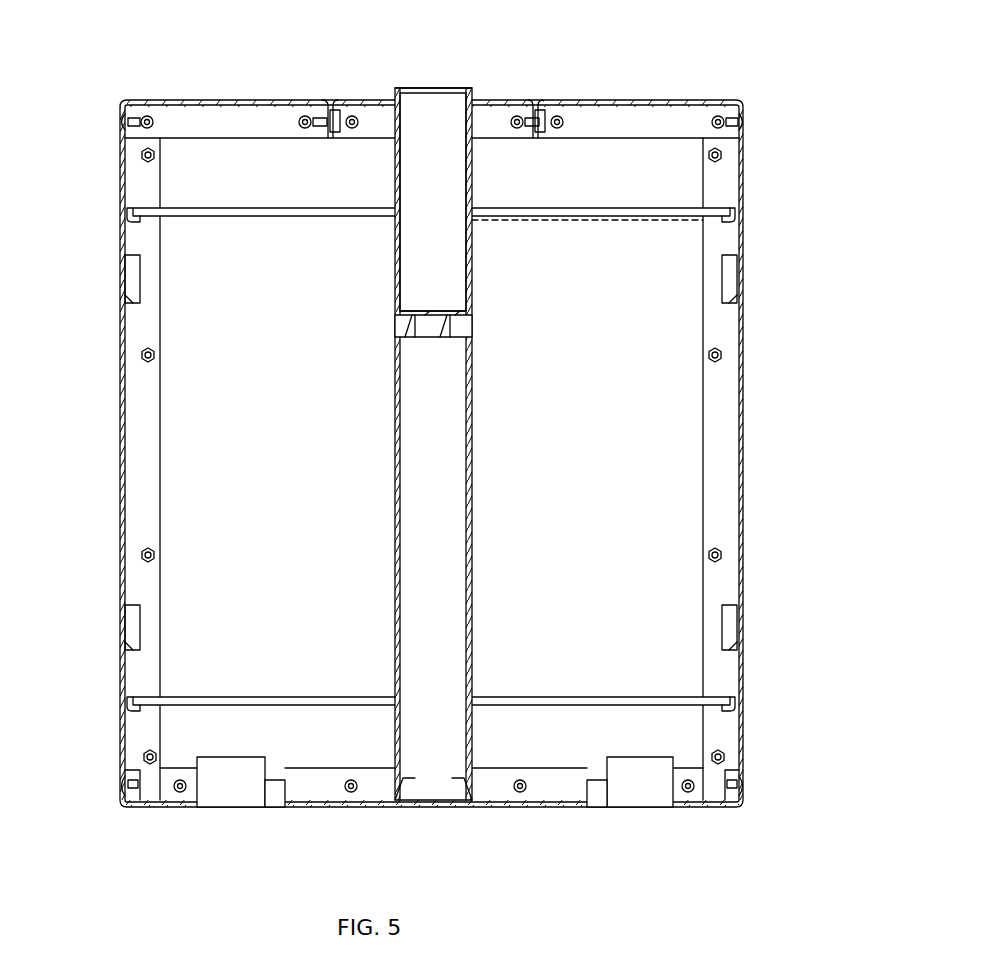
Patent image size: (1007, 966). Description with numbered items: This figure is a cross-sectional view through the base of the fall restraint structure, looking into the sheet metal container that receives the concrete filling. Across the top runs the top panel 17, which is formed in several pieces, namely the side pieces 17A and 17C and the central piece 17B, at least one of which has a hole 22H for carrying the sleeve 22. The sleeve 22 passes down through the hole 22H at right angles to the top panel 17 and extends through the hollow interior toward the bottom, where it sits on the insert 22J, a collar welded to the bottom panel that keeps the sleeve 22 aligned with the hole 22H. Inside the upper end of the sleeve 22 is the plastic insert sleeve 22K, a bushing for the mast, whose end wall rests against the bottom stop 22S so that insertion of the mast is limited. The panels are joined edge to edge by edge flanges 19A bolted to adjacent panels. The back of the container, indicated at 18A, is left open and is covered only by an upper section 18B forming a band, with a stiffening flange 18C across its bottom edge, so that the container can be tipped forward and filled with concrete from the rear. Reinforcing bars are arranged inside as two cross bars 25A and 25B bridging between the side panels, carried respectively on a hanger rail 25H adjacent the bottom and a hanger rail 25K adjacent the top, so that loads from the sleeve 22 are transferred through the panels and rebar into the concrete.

The top panel 17 is at (358, 78).
The top panel piece 17A is at (248, 97).
The central top panel piece 17B is at (502, 97).
The top panel piece 17C is at (658, 100).
The open back 18A is at (657, 496).
The upper section 18B is at (573, 186).
The stiffening flange 18C is at (528, 215).
The edge flange 19A is at (148, 478).
The sleeve 22 is at (473, 518).
The hole 22H is at (392, 98).
The insert 22J is at (403, 776).
The plastic insert sleeve 22K is at (414, 272).
The bottom stop 22S is at (426, 320).
The cross bar 25A is at (283, 693).
The cross bar 25B is at (258, 213).
The hanger rail 25H is at (140, 710).
The hanger rail 25K is at (133, 218).